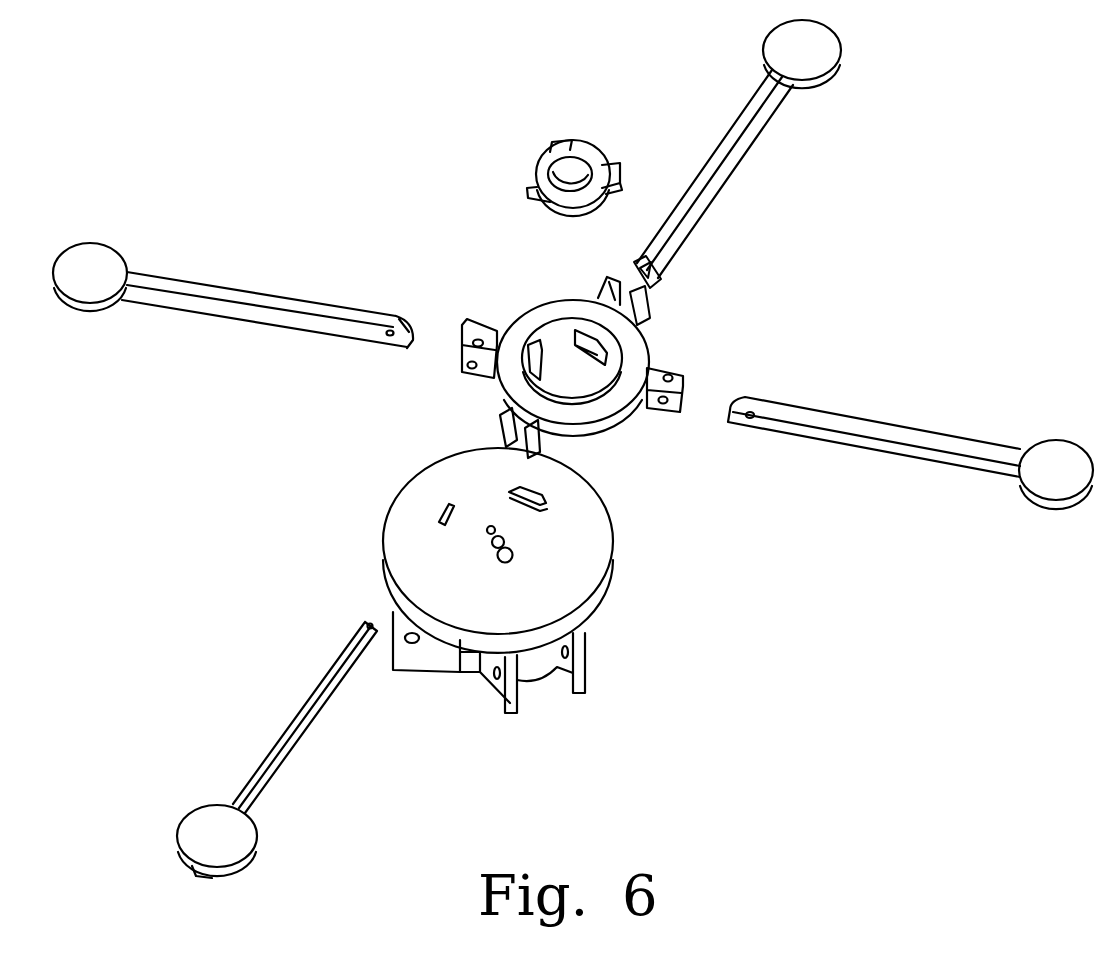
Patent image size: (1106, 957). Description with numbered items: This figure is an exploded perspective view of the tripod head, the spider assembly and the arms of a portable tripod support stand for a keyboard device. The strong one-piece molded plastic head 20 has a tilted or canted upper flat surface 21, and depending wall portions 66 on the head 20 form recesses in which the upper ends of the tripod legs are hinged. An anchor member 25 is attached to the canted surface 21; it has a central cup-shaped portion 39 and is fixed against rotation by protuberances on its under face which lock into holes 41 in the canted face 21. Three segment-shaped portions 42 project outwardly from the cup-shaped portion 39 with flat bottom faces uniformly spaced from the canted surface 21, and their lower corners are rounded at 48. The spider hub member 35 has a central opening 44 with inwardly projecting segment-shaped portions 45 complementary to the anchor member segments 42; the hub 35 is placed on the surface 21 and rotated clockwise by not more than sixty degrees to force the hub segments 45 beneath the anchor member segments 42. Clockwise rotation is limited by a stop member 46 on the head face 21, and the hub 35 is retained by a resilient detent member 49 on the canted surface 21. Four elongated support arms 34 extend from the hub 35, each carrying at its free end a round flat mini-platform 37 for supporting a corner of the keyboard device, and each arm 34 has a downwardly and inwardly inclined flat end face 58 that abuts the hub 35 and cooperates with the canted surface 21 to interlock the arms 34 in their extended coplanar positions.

The head 20 is at (478, 619).
The canted upper flat surface 21 is at (557, 577).
The anchor member 25 is at (553, 146).
The support arms 34 is at (220, 312).
The spider hub member 35 is at (579, 376).
The mini-platforms 37 is at (95, 263).
The cup-shaped portion 39 is at (576, 174).
The holes 41 is at (513, 557).
The segment-shaped portions 42 is at (555, 147).
The central opening 44 is at (603, 375).
The segment-shaped portions 45 is at (557, 348).
The stop member 46 is at (438, 512).
The rounded lower corners 48 is at (563, 213).
The detent member 49 is at (510, 493).
The inclined flat end face 58 is at (417, 335).
The depending wall portions 66 is at (428, 655).